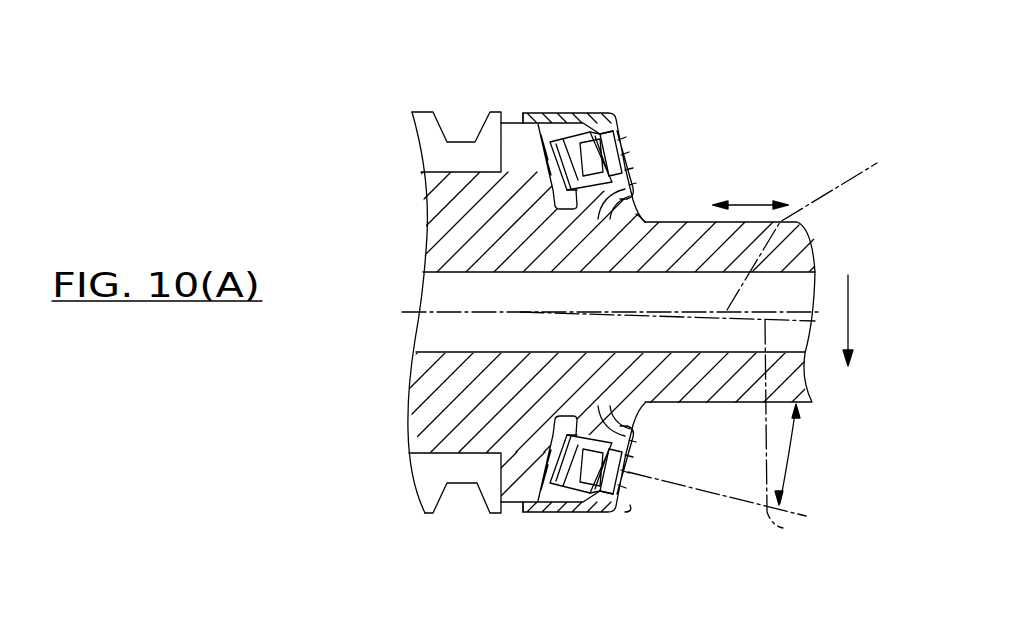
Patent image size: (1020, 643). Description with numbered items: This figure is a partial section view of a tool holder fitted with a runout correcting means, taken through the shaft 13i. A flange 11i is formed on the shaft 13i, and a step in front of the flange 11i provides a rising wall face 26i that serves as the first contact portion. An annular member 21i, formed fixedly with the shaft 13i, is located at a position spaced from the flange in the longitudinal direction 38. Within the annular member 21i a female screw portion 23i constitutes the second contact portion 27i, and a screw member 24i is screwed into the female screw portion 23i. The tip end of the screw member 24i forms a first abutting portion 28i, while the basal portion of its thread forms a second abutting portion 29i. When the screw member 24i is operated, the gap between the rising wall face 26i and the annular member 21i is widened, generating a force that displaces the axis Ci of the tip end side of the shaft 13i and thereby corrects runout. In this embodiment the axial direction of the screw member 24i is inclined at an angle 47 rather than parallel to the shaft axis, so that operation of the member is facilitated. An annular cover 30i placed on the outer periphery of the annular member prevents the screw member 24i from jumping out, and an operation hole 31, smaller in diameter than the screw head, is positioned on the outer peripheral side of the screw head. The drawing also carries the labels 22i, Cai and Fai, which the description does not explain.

The flange 11i is at (512, 155).
The shaft 13i is at (713, 383).
The annular member 21i is at (610, 113).
The lower bearing seat 22i is at (548, 410).
The female screw portion 23i is at (615, 120).
The screw member 24i is at (548, 200).
The rising wall face 26i is at (540, 175).
The second contact portion 27i is at (643, 220).
The first abutting portion 28i is at (562, 113).
The second abutting portion 29i is at (645, 222).
The annular cover 30i is at (538, 113).
The operation hole 31 is at (633, 505).
The longitudinal direction 38 is at (747, 205).
The angle 47 is at (788, 477).
The axis Cai is at (877, 160).
The axis Ci is at (783, 528).
The force Fai is at (848, 325).